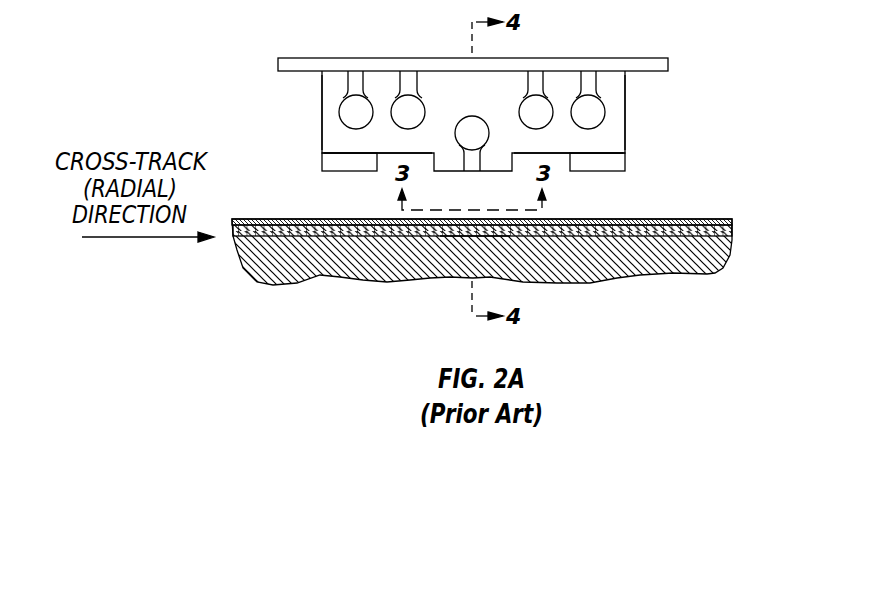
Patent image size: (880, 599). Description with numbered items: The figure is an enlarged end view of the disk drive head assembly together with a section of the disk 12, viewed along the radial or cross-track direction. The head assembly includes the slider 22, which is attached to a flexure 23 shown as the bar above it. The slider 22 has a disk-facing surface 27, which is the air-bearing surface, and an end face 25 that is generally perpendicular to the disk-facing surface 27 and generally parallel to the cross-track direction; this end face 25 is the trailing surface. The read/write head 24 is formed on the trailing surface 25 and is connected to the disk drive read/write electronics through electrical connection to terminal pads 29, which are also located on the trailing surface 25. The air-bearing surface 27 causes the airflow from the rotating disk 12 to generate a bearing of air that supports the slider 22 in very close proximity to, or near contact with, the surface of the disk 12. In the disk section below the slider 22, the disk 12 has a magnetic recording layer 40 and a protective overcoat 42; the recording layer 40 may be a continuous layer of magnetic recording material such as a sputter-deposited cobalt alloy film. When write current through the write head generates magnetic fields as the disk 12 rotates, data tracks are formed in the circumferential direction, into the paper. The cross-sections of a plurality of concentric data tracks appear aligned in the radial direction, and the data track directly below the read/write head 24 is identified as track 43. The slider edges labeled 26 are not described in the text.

The disk 12 is at (716, 248).
The slider 22 is at (617, 147).
The flexure 23 is at (657, 60).
The read/write head 24 is at (470, 118).
The trailing surface 25 is at (334, 150).
The slider side edges 26 is at (322, 122).
The air-bearing surface 27 is at (350, 172).
The terminal pads 29 is at (392, 111).
The magnetic recording layer 40 is at (735, 228).
The protective overcoat 42 is at (690, 220).
The track 43 is at (472, 240).